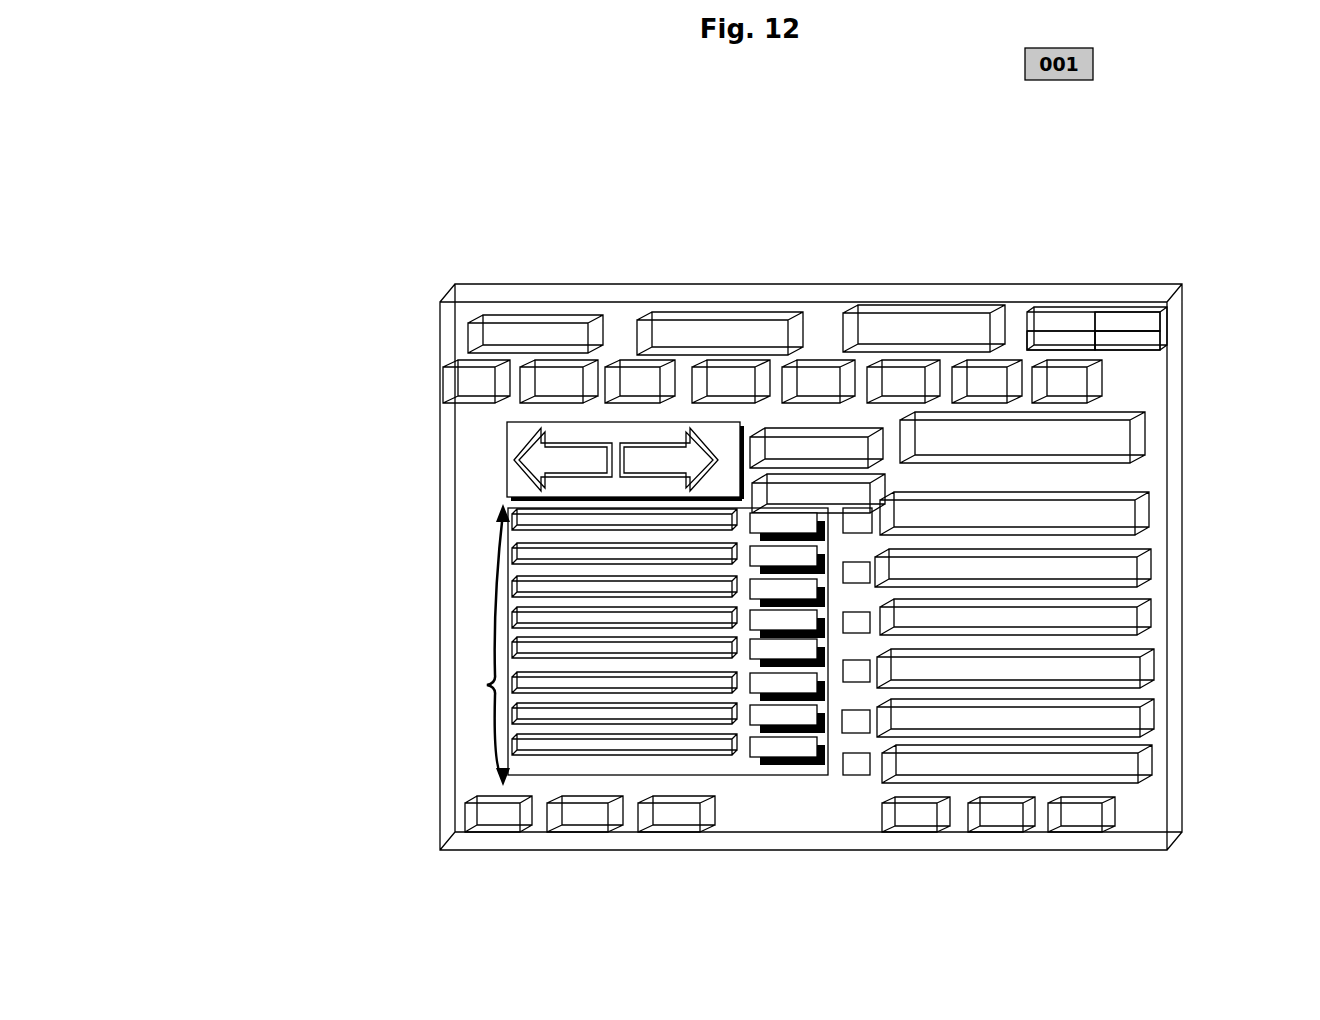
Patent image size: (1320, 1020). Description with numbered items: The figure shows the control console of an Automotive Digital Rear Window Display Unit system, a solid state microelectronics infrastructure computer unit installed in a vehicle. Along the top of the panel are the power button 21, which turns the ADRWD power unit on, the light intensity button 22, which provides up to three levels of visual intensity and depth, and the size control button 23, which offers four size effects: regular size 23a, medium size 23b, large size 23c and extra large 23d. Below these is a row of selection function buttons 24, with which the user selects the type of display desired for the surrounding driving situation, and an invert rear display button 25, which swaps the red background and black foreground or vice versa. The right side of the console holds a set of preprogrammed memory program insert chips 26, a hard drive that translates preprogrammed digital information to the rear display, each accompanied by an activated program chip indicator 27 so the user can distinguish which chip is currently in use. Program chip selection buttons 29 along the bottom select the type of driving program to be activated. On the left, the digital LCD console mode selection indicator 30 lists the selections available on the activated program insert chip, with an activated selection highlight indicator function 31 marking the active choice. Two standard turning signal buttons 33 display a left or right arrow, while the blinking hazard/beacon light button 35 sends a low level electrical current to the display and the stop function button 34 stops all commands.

The power button 21 is at (497, 323).
The light intensity button 22 is at (705, 313).
The size control button 23 is at (927, 310).
The regular size 23a is at (1060, 312).
The medium size 23b is at (1143, 313).
The large size 23c is at (1078, 333).
The extra large 23d is at (1147, 333).
The selection function buttons 24 is at (1110, 377).
The invert rear display button 25 is at (1148, 440).
The preprogrammed memory program insert chips 26 is at (1153, 518).
The activated program chip indicator 27 is at (862, 775).
The program chip selection buttons 29 is at (457, 805).
The digital LCD console mode selection indicator 30 is at (485, 685).
The activated selection highlight indicator function 31 is at (785, 770).
The turning signal buttons 33 is at (508, 466).
The stop function button 34 is at (751, 439).
The blinking hazard/beacon light button 35 is at (765, 486).